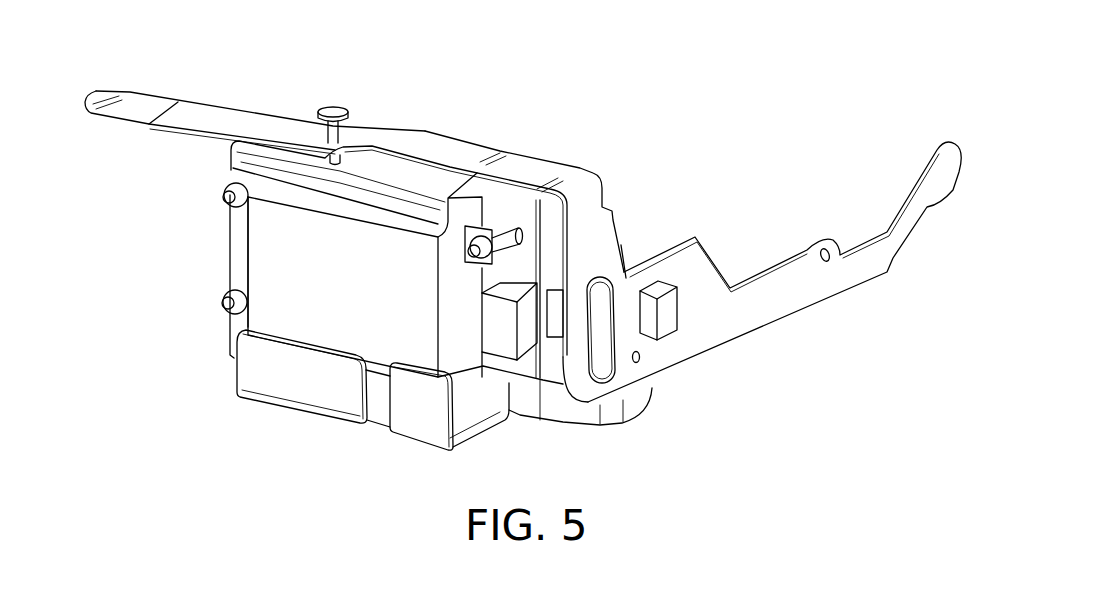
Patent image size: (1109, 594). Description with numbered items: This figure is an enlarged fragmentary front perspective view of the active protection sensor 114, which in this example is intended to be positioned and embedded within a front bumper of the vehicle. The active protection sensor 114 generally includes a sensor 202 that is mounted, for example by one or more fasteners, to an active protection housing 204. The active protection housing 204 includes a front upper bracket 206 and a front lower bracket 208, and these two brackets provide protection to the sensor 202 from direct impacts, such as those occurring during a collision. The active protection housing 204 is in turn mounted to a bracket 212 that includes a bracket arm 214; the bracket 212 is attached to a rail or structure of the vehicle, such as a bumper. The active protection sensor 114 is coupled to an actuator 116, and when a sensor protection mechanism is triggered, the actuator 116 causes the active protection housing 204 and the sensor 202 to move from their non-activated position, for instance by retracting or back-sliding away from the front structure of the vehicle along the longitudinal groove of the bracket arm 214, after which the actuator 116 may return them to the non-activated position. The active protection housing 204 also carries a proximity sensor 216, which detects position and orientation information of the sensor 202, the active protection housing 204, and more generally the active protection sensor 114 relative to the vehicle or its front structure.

The active protection sensor 114 is at (705, 122).
The actuator 116 is at (667, 311).
The sensor 202 is at (365, 292).
The active protection housing 204 is at (513, 428).
The front upper bracket 206 is at (247, 163).
The front lower bracket 208 is at (417, 417).
The bracket 212 is at (236, 110).
The bracket arm 214 is at (768, 267).
The proximity sensor 216 is at (583, 277).